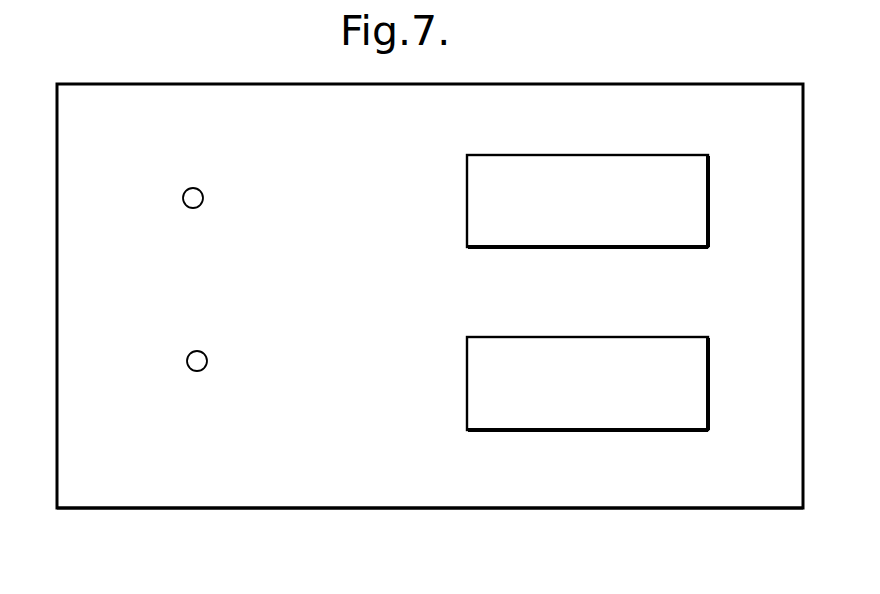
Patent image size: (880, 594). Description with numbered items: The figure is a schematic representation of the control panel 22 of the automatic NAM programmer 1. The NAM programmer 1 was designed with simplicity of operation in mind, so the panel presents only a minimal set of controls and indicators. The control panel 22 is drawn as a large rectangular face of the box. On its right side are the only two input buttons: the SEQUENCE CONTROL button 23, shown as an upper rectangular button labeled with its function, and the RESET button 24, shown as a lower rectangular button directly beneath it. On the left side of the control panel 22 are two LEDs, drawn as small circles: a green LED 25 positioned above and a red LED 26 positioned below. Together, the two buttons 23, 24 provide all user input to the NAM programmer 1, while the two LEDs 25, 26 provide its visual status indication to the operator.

The automatic NAM programmer 1 is at (790, 492).
The control panel 22 is at (218, 499).
The SEQUENCE CONTROL button 23 is at (695, 167).
The RESET button 24 is at (698, 343).
The green LED 25 is at (193, 198).
The red LED 26 is at (197, 361).